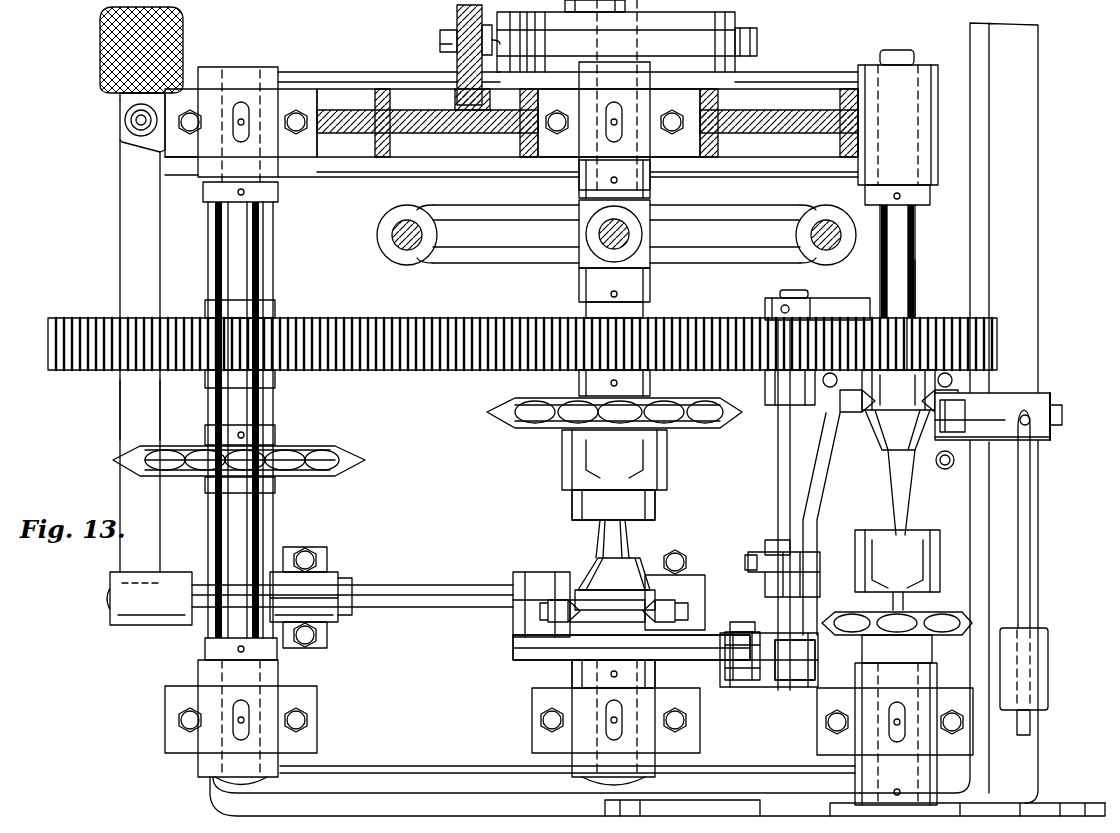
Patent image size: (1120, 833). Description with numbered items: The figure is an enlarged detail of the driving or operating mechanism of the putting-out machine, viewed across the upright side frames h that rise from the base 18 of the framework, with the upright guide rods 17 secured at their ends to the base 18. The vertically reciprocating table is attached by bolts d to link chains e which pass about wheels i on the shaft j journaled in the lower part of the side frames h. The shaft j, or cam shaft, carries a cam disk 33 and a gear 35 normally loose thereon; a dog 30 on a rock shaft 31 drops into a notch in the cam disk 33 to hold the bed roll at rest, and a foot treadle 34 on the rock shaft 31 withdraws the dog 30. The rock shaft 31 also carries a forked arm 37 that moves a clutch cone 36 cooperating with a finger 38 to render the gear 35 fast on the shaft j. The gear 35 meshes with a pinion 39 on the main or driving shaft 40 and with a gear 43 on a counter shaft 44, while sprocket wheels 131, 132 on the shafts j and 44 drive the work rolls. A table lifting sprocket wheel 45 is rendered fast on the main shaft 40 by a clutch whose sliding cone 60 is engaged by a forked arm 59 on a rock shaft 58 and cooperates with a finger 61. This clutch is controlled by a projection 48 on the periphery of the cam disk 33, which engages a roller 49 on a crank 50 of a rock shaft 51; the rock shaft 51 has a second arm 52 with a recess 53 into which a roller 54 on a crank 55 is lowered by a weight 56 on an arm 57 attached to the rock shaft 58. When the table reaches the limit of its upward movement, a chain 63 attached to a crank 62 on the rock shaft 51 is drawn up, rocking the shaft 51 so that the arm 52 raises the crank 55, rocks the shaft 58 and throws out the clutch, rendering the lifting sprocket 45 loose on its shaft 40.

The upright guide rods 17 is at (377, 236).
The base 18 is at (1038, 580).
The dog 30 is at (513, 624).
The rock shaft 31 is at (415, 585).
The cam disk 33 is at (513, 652).
The foot treadle 34 is at (124, 409).
The gear 35 is at (690, 313).
The cone 36 is at (610, 580).
The forked arm 37 is at (557, 604).
The finger 38 is at (618, 505).
The pinion 39 is at (990, 318).
The main shaft 40 is at (915, 250).
The gear 43 is at (330, 313).
The counter shaft 44 is at (262, 516).
The table lifting sprocket wheel 45 is at (948, 615).
The projection 48 is at (697, 655).
The roller 49 is at (770, 668).
The crank 50 is at (770, 630).
The rock shaft 51 is at (778, 471).
The arm 52 is at (748, 560).
The recess 53 is at (775, 553).
The roller 54 is at (783, 572).
The crank 55 is at (808, 455).
The weight 56 is at (1048, 659).
The arm 57 is at (1024, 510).
The rock shaft 58 is at (1056, 426).
The forked arm 59 is at (980, 430).
The cone 60 is at (870, 448).
The finger 61 is at (915, 490).
The crank 62 is at (836, 308).
The chain 63 is at (920, 282).
The sprocket wheel 131 is at (492, 414).
The sprocket wheel 132 is at (356, 456).
The bolts d is at (440, 44).
The link chains e is at (746, 42).
The side frames h is at (587, 123).
The wheels i is at (616, 36).
The shaft j is at (597, 538).